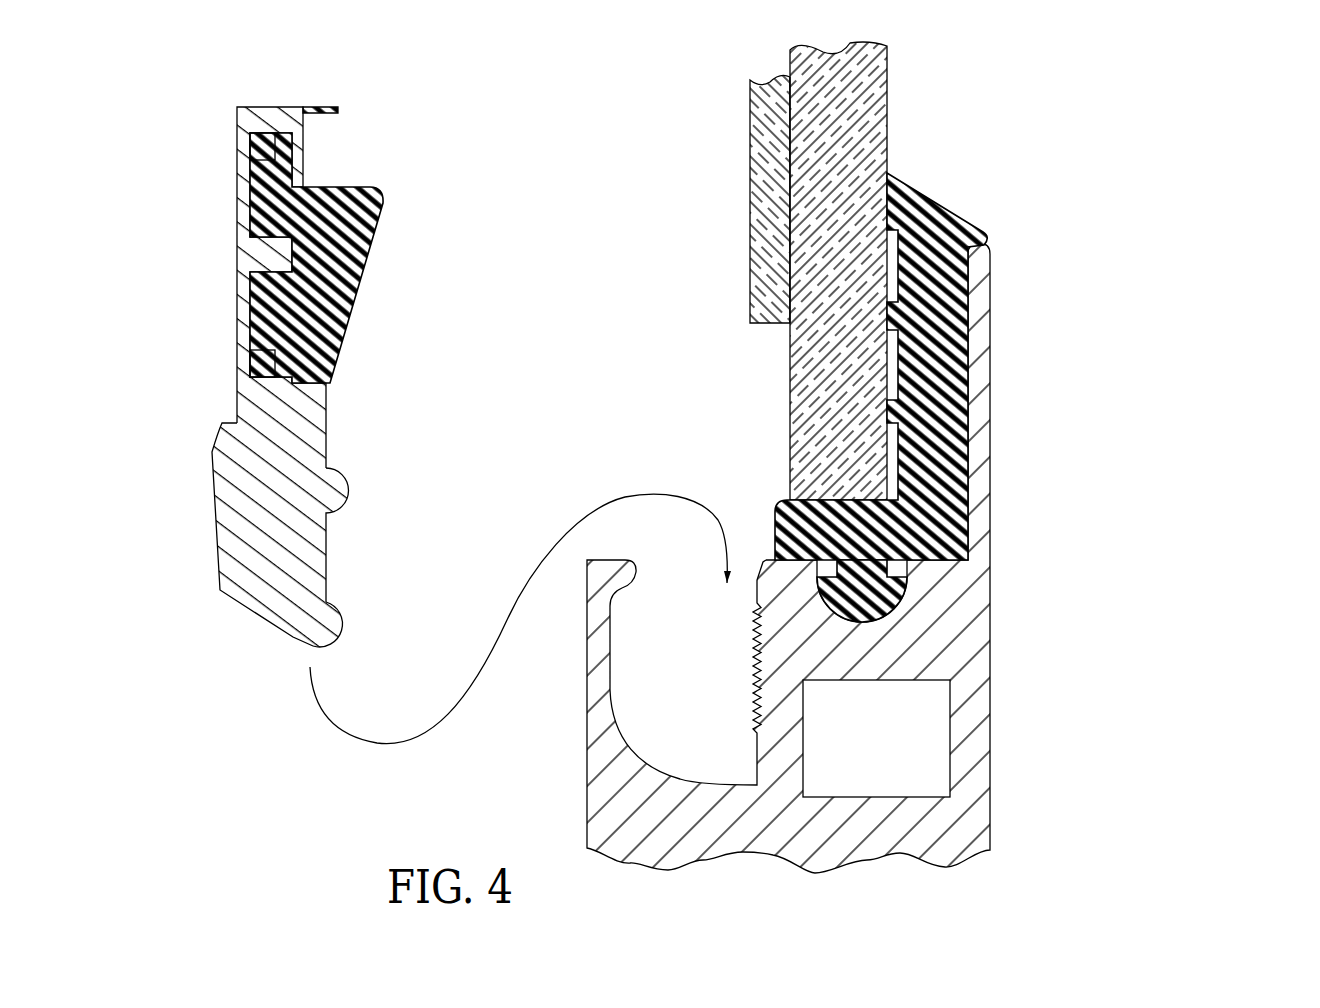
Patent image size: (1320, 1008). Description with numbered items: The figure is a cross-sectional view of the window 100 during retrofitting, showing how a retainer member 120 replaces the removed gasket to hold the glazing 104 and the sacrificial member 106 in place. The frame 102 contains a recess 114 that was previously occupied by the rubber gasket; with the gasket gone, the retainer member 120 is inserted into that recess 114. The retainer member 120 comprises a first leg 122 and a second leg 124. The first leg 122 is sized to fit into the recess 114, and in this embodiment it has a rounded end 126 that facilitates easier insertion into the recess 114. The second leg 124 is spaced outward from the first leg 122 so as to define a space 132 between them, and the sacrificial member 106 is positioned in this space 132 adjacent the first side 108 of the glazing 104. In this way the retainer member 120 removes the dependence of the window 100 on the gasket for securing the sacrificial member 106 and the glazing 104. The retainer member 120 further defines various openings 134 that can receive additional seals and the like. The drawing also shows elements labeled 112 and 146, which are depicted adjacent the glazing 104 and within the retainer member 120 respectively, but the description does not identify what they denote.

The window 100 is at (940, 473).
The frame 102 is at (990, 738).
The glazing 104 is at (857, 88).
The sacrificial member 106 is at (768, 135).
The first side 108 is at (790, 72).
The glazing seal 112 is at (930, 220).
The recess 114 is at (757, 781).
The retainer member 120 is at (437, 404).
The first leg 122 is at (368, 374).
The second leg 124 is at (217, 107).
The rounded end 126 is at (330, 644).
The space 132 is at (300, 376).
The openings 134 is at (262, 132).
The seal member 146 is at (367, 282).